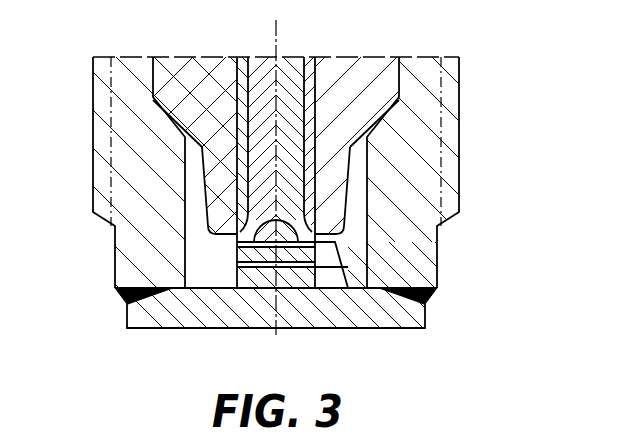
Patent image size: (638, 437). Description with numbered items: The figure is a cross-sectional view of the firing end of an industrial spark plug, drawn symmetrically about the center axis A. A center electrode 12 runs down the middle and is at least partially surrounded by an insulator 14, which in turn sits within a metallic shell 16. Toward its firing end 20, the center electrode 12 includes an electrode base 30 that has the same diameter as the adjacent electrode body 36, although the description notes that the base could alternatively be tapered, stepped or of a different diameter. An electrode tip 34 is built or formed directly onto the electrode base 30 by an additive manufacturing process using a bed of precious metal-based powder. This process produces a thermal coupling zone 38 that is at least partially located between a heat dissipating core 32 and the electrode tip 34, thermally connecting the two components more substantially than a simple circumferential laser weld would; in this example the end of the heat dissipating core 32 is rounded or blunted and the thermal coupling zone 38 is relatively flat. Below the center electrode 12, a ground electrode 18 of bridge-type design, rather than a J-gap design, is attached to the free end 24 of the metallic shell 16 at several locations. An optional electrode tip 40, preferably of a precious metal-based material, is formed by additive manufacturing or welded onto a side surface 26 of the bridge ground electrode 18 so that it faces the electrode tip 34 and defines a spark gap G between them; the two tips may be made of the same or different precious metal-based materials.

The center electrode 12 is at (316, 90).
The insulator 14 is at (385, 90).
The metallic shell 16 is at (427, 113).
The ground electrode 18 is at (356, 290).
The firing end 20 is at (226, 272).
The free end 24 is at (173, 285).
The side surface 26 is at (335, 283).
The electrode base 30 is at (316, 226).
The heat dissipating core 32 is at (262, 199).
The electrode tip 34 is at (313, 263).
The electrode body 36 is at (236, 93).
The thermal coupling zone 38 is at (252, 236).
The electrode tip 40 is at (348, 268).
The center axis A is at (276, 28).
The spark gap G is at (222, 260).